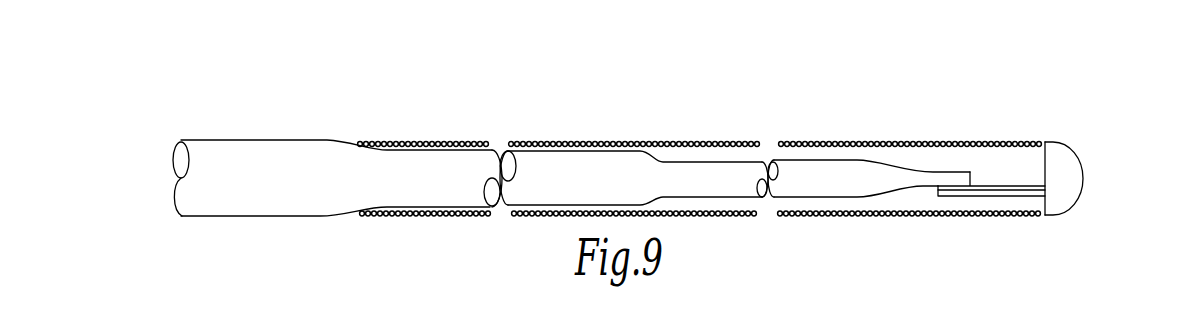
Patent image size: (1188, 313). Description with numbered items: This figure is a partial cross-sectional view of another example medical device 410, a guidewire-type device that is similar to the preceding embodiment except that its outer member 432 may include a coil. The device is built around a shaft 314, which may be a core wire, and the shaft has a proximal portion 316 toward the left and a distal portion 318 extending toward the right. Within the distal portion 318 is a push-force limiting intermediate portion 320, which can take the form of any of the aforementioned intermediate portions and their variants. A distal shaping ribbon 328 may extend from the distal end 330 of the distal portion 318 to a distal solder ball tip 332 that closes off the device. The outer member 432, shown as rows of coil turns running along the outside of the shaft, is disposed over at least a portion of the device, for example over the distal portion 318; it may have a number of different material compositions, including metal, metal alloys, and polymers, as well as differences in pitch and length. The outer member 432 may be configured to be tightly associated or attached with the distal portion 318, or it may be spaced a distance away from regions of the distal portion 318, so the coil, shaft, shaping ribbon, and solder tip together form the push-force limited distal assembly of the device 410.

The medical device 410 is at (391, 86).
The proximal portion 316 is at (238, 170).
The shaft 314 is at (455, 125).
The outer member 432 is at (543, 125).
The distal portion 318 is at (722, 134).
The intermediate portion 320 is at (828, 173).
The distal end 330 is at (946, 180).
The distal shaping ribbon 328 is at (990, 188).
The distal solder ball tip 332 is at (1075, 178).